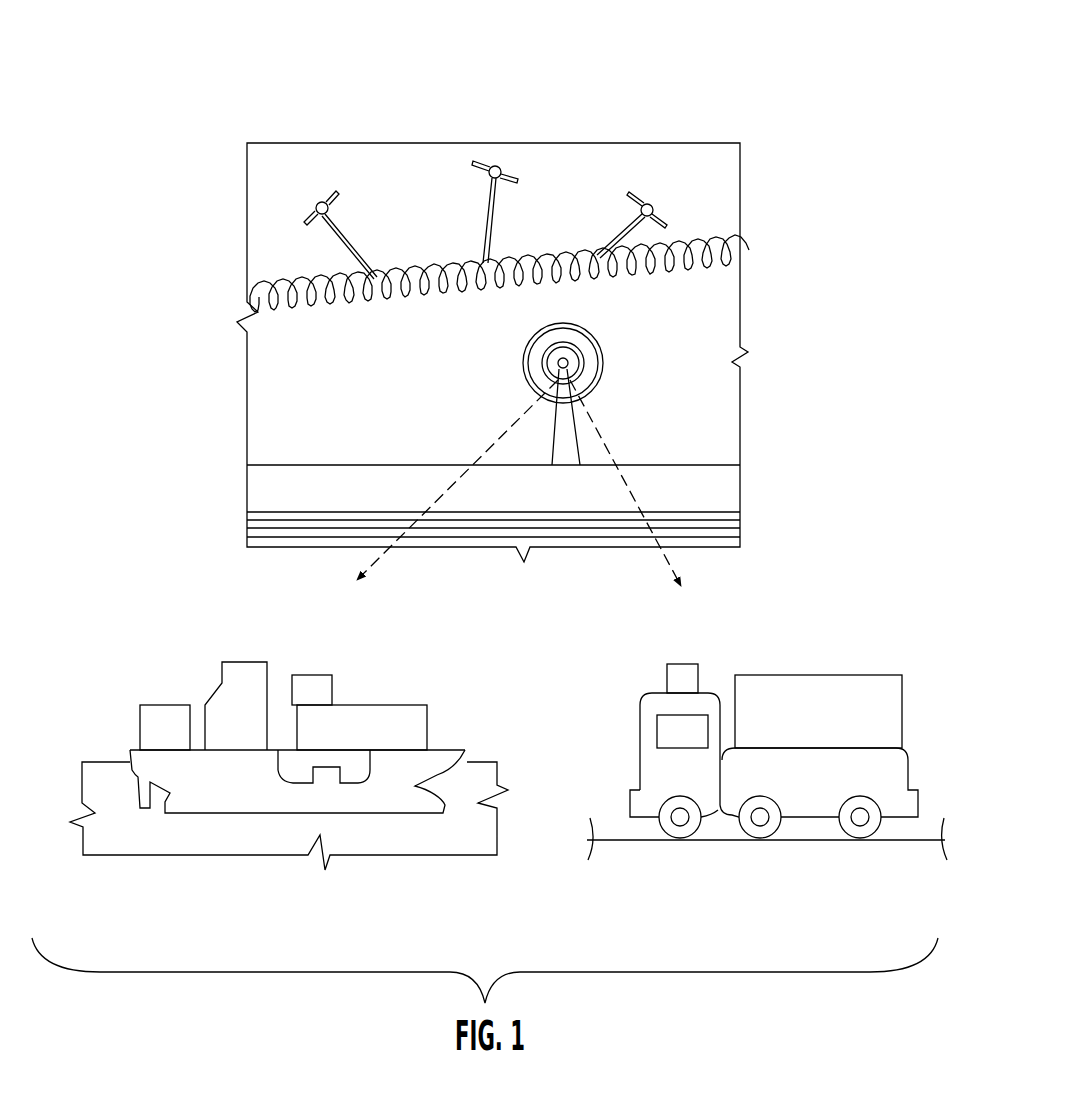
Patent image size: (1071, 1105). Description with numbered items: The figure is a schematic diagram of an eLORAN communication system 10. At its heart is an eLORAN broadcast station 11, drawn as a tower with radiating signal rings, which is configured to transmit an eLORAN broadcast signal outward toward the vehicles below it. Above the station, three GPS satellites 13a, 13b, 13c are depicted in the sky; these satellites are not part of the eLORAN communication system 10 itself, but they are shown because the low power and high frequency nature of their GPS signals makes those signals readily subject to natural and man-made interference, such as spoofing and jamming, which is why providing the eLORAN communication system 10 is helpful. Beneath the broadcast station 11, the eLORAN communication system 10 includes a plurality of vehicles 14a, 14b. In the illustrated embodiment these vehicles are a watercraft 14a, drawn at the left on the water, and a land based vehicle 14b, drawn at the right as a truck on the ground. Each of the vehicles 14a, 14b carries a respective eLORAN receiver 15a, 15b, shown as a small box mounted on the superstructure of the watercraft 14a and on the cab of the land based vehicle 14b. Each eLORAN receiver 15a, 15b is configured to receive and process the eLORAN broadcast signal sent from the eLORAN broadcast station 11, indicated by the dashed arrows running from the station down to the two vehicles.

The eLORAN communication system 10 is at (767, 62).
The eLORAN broadcast station 11 is at (600, 480).
The GPS satellite 13a is at (653, 210).
The GPS satellite 13b is at (495, 166).
The GPS satellite 13c is at (316, 206).
The watercraft 14a is at (289, 745).
The land based vehicle 14b is at (767, 732).
The eLORAN receiver 15a is at (313, 686).
The eLORAN receiver 15b is at (683, 680).